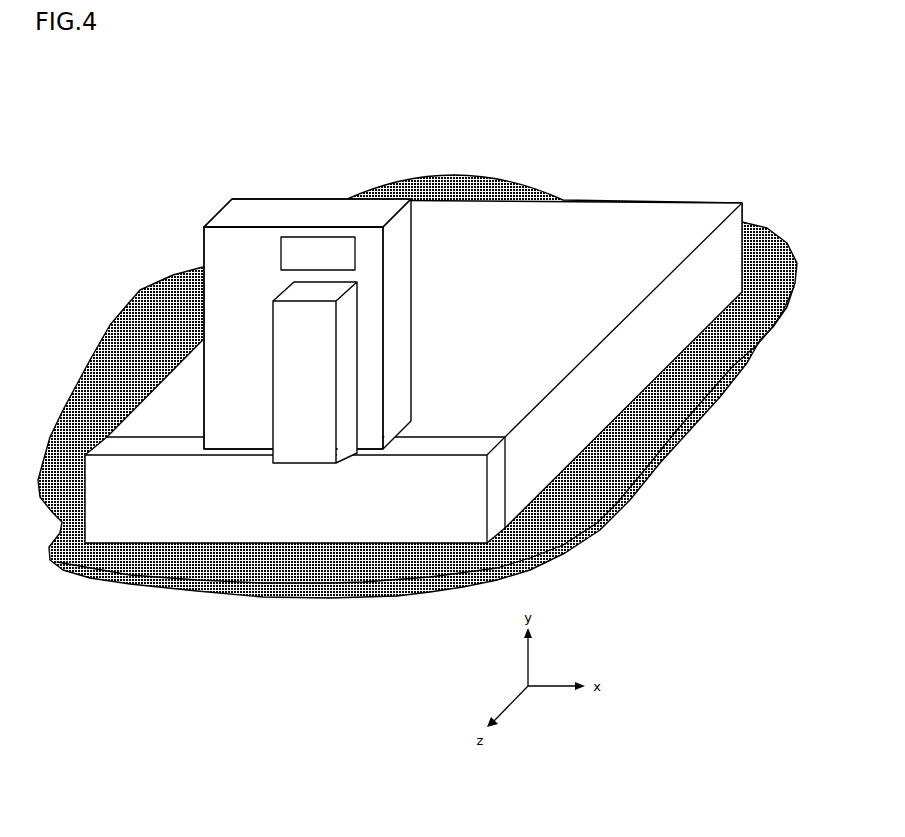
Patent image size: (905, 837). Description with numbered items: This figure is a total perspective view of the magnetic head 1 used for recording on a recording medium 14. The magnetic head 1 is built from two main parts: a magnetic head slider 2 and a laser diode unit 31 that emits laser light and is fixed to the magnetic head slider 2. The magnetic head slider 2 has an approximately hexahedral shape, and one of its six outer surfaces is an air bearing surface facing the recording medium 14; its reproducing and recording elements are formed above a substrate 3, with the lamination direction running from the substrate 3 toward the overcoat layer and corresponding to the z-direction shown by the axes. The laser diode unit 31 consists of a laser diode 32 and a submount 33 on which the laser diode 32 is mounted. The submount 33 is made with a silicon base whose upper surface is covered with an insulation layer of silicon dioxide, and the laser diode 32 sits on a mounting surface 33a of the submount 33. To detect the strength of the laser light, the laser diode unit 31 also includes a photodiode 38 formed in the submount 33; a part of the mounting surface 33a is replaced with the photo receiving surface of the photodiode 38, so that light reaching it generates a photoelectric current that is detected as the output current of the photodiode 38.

The magnetic head 1 is at (282, 273).
The magnetic head slider 2 is at (448, 342).
The substrate 3 is at (687, 335).
The recording medium 14 is at (73, 398).
The laser diode unit 31 is at (282, 293).
The laser diode 32 is at (280, 312).
The submount 33 is at (312, 208).
The mounting surface 33a is at (217, 255).
The photodiode 38 is at (325, 243).